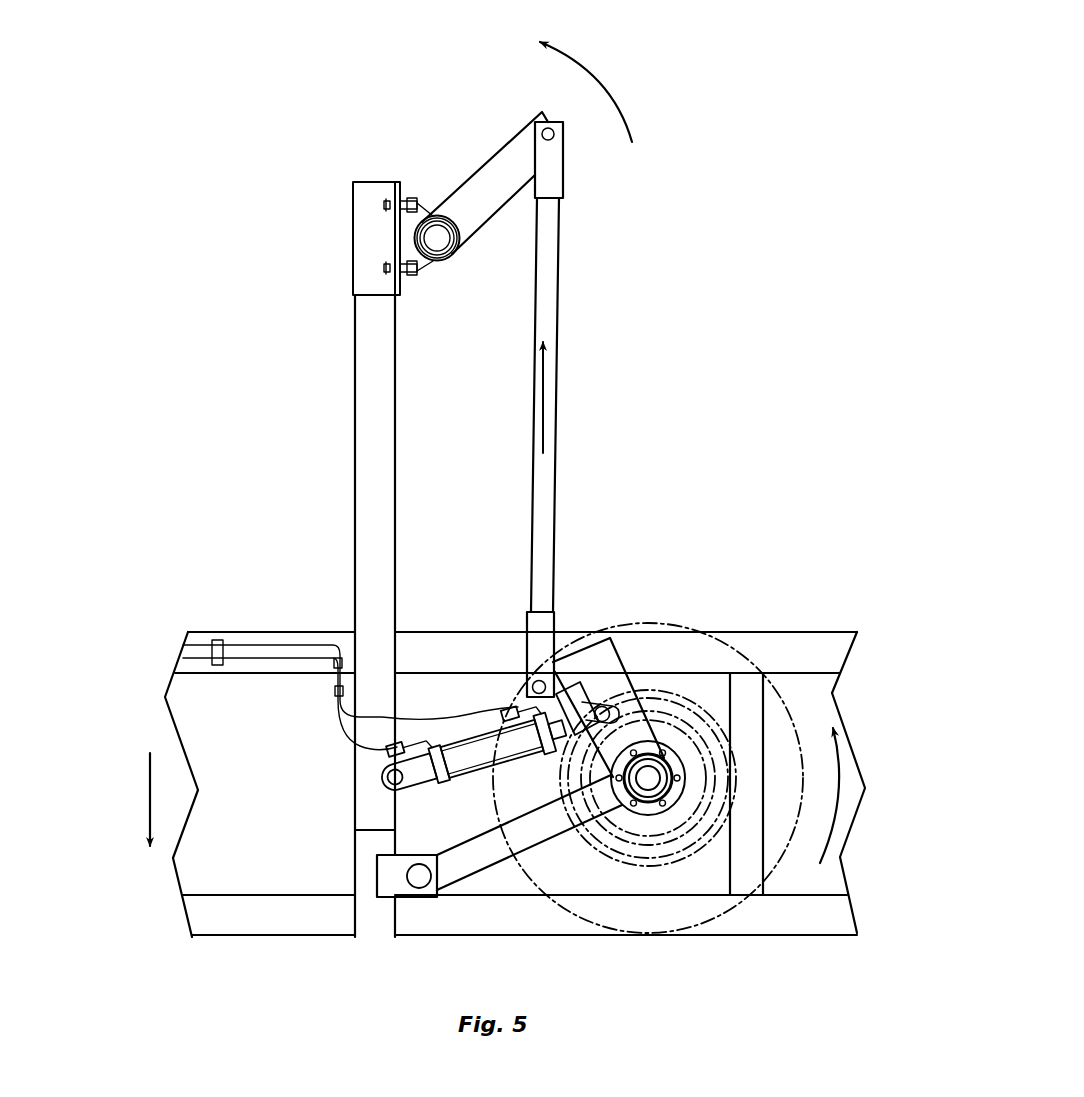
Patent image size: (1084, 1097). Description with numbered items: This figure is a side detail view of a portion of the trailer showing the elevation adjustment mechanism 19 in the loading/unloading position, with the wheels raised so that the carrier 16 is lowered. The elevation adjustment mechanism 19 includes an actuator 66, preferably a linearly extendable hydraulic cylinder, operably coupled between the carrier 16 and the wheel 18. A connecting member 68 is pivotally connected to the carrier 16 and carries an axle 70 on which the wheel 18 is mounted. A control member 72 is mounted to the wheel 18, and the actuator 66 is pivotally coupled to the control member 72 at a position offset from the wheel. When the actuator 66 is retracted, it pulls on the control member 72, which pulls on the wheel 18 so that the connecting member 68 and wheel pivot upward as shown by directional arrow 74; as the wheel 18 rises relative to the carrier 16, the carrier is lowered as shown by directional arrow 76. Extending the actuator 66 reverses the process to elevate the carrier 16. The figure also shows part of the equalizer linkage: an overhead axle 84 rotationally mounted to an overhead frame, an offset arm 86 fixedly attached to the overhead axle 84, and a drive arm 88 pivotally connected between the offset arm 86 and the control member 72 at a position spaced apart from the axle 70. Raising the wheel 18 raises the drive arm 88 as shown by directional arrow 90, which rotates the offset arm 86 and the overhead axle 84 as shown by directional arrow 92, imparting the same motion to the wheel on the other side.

The carrier 16 is at (841, 627).
The wheels 18 is at (690, 620).
The elevation adjustment mechanism 19 is at (297, 949).
The actuators 66 is at (473, 753).
The connecting members 68 is at (485, 868).
The axles 70 is at (665, 792).
The control members 72 is at (613, 664).
The directional arrow 74 is at (840, 798).
The directional arrow 76 is at (148, 812).
The overhead axle 84 is at (437, 238).
The offset arms 86 is at (503, 146).
The drive arms 88 is at (557, 295).
The directional arrow 90 is at (545, 405).
The directional arrow 92 is at (583, 62).